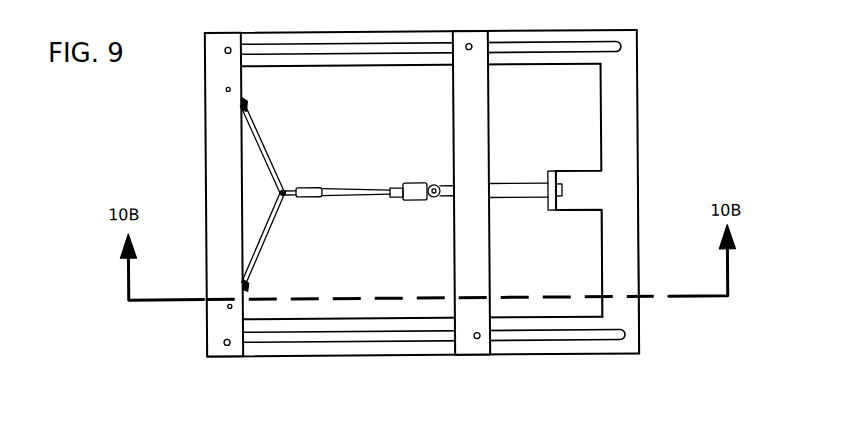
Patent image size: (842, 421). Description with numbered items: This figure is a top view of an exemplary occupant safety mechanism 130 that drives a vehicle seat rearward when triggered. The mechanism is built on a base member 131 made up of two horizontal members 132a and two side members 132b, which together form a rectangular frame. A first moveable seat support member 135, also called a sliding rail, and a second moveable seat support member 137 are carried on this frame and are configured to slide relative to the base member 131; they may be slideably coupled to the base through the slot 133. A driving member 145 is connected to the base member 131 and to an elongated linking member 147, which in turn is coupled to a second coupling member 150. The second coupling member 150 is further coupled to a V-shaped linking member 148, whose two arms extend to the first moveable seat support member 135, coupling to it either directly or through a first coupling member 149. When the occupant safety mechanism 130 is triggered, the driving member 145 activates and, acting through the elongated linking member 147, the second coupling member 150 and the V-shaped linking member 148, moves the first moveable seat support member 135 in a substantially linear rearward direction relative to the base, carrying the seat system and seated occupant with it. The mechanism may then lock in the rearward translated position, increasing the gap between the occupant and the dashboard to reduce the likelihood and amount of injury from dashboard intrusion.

The occupant safety mechanism 130 is at (692, 110).
The base member 131 is at (627, 228).
The horizontal member 132a is at (628, 103).
The side member 132b is at (287, 40).
The slot 133 is at (402, 47).
The first moveable seat support member 135 is at (205, 162).
The second moveable seat support member 137 is at (476, 125).
The driving member 145 is at (513, 189).
The elongated linking member 147 is at (368, 190).
The V-shaped linking member 148 is at (273, 225).
The first coupling member 149 is at (243, 108).
The second coupling member 150 is at (302, 183).